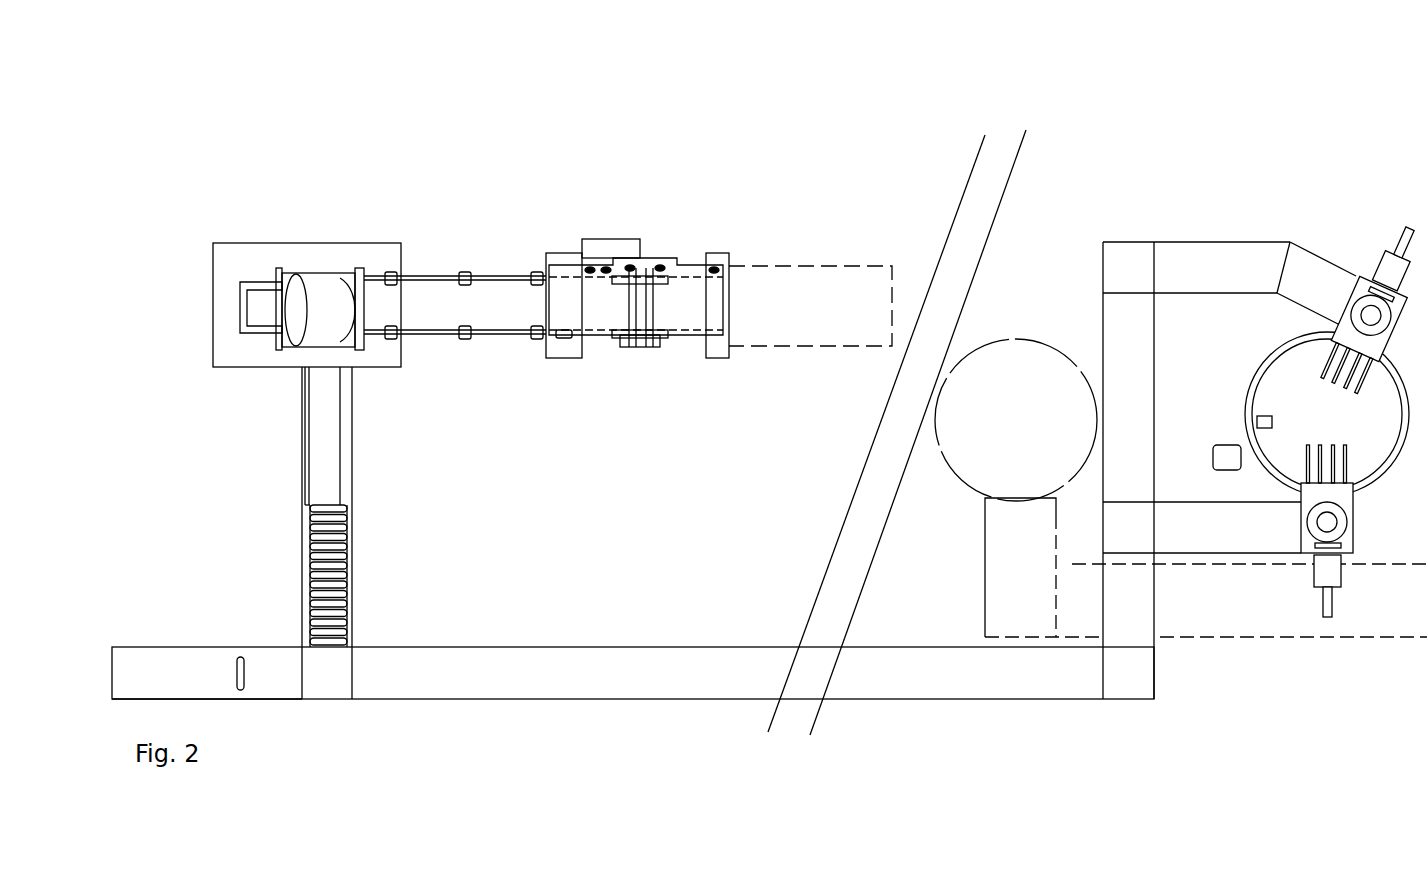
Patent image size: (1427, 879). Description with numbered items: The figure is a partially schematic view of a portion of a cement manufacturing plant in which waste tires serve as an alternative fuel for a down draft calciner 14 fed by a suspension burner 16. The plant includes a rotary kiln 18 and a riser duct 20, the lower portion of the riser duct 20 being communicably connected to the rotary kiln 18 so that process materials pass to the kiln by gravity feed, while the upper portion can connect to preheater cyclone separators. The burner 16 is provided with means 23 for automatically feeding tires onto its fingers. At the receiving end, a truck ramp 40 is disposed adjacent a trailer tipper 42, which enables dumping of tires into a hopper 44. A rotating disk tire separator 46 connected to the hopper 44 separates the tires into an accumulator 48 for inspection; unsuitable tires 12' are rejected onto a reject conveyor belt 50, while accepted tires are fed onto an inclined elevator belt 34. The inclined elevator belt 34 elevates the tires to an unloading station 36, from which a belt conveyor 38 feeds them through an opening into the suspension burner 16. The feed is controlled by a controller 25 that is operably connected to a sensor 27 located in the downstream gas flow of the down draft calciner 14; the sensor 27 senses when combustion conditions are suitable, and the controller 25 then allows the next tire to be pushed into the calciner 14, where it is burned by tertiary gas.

The unsuitable tires 12' is at (216, 614).
The down draft calciner 14 is at (1283, 345).
The suspension burner 16 is at (1383, 268).
The rotary kiln 18 is at (1390, 618).
The riser duct 20 is at (1043, 347).
The means for automatically feeding the tires 23 is at (735, 186).
The controller 25 is at (1215, 443).
The sensor 27 is at (1250, 412).
The inclined elevator belt 34 is at (623, 660).
The unloading station 36 is at (1145, 612).
The belt conveyor 38 is at (1235, 553).
The truck ramp 40 is at (843, 268).
The trailer tipper 42 is at (683, 335).
The hopper 44 is at (433, 297).
The rotating disk tire separator 46 is at (290, 243).
The accumulator 48 is at (323, 435).
The reject conveyor belt 50 is at (265, 700).